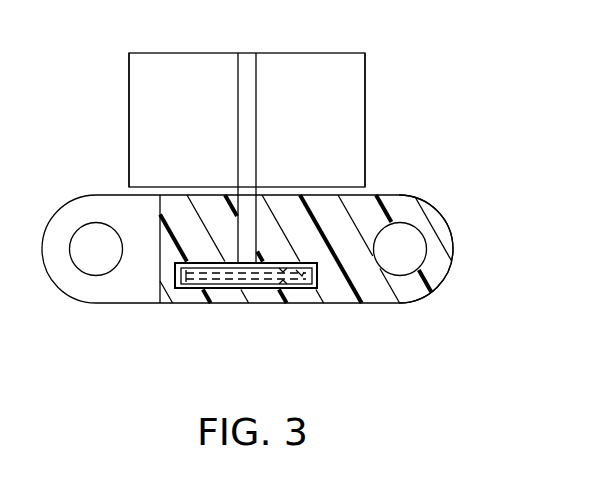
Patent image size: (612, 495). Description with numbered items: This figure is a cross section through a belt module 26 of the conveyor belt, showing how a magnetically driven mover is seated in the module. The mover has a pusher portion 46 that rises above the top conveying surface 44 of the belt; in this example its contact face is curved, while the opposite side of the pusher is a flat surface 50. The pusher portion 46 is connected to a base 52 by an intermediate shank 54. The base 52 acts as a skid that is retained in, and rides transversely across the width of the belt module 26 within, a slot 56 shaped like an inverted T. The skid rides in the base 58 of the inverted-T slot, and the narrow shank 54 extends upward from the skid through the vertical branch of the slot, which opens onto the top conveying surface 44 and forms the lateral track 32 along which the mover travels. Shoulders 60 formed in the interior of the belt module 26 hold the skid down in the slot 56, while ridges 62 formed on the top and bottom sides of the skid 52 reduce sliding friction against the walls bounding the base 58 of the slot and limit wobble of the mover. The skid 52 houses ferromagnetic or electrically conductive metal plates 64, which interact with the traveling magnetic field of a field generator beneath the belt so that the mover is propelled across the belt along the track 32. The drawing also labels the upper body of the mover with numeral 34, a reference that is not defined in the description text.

The belt module 26 is at (93, 296).
The lateral track 32 is at (236, 188).
The mounting block 34 is at (302, 53).
The top conveying surface 44 is at (390, 195).
The pusher portion 46 is at (366, 107).
The flat surface 50 is at (148, 123).
The base (skid) 52 is at (246, 274).
The intermediate shank 54 is at (252, 237).
The slot 56 is at (188, 290).
The base of the inverted-T slot 58 is at (300, 286).
The shoulders 60 is at (308, 270).
The ridges 62 is at (163, 215).
The metal plates 64 is at (348, 253).